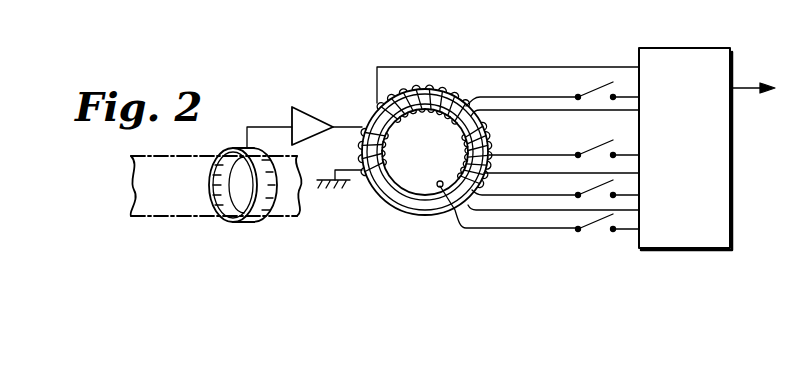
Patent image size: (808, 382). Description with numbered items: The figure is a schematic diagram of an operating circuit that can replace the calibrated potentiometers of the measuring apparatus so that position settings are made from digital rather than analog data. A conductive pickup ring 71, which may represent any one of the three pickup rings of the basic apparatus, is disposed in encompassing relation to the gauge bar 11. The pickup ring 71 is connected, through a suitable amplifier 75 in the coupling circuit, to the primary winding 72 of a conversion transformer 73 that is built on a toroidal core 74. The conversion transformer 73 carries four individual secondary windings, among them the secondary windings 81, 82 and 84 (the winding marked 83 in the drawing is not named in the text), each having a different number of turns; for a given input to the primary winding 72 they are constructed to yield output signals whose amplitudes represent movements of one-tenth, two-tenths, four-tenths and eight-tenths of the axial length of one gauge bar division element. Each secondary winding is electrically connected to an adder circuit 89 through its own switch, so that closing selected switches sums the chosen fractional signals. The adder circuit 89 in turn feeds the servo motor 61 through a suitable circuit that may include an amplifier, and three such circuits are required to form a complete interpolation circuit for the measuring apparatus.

The gauge bar 11 is at (148, 216).
The conductive pickup ring 71 is at (252, 222).
The primary winding 72 is at (352, 144).
The conversion transformer 73 is at (415, 175).
The toroidal core 74 is at (390, 197).
The amplifier 75 is at (296, 109).
The secondary winding 81 is at (438, 182).
The secondary winding 82 is at (483, 187).
The winding 83 is at (458, 147).
The secondary winding 84 is at (440, 92).
The adder circuit 89 is at (660, 60).
The servo motor 61 is at (780, 180).